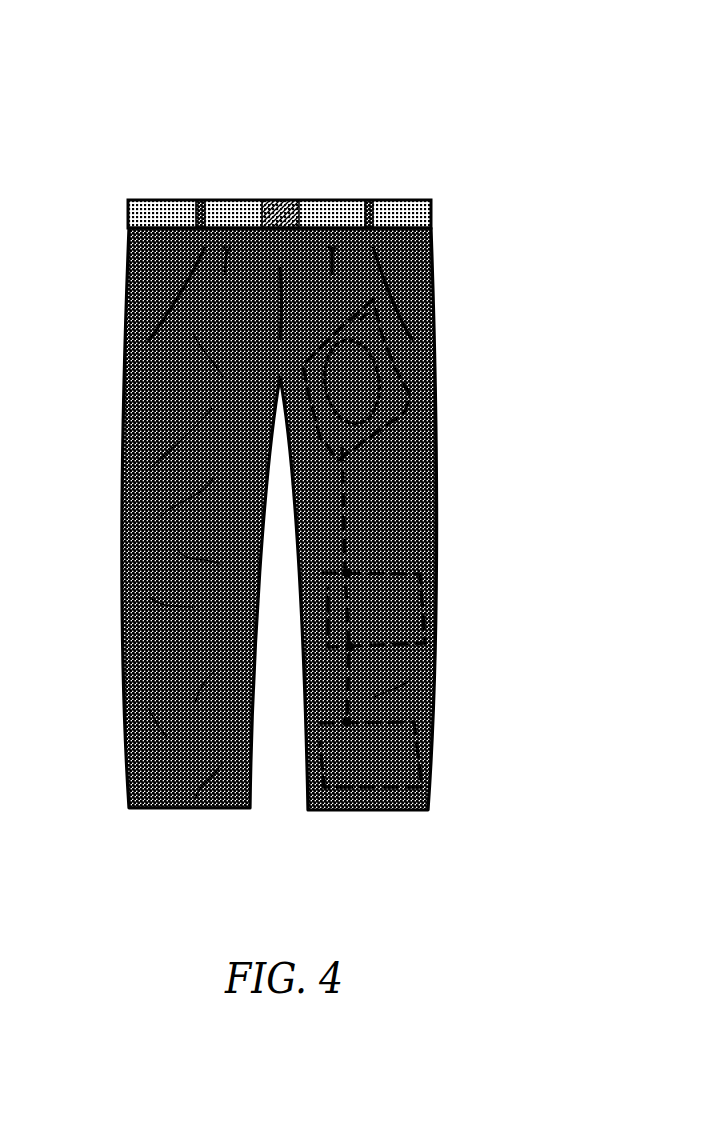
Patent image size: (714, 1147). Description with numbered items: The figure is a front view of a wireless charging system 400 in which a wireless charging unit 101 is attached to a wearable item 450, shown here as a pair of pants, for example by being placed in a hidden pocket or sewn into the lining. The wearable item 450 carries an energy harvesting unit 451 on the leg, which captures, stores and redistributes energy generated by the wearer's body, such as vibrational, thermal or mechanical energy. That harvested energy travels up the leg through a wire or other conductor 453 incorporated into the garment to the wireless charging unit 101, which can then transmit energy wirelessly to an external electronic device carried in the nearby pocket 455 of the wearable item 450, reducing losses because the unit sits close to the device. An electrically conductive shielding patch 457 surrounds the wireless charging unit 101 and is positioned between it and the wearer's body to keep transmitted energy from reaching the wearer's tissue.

The wireless charging system 400 is at (541, 121).
The wearable item 450 is at (114, 234).
The energy harvesting unit 451 is at (398, 618).
The conductor 453 is at (350, 686).
The pocket 455 is at (402, 327).
The electrically conductive shielding patch 457 is at (373, 305).
The wireless charging unit 101 is at (357, 387).